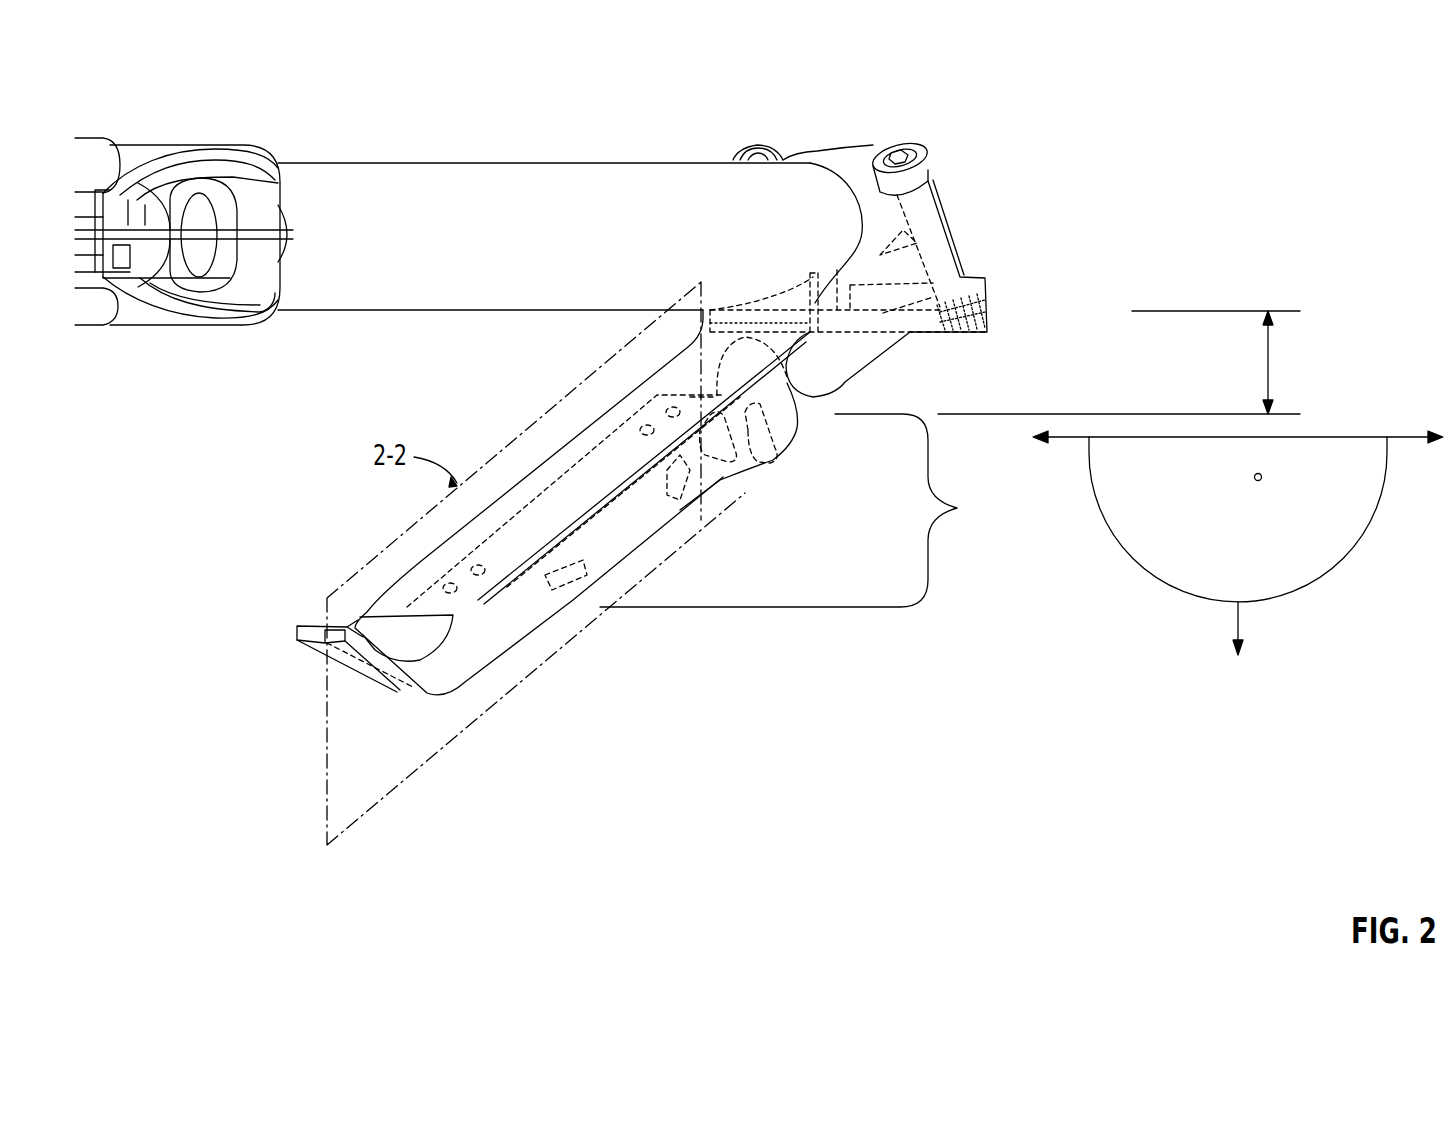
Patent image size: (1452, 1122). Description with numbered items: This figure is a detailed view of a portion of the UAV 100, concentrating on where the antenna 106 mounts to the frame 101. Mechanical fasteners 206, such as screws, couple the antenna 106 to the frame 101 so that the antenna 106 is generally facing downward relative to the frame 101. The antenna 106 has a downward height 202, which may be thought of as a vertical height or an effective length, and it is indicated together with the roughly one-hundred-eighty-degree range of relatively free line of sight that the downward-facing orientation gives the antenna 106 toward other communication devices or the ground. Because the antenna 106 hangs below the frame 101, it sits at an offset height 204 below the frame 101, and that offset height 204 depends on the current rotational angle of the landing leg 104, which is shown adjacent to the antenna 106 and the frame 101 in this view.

The UAV 100 is at (182, 94).
The frame 101 is at (540, 249).
The landing leg 104 is at (418, 561).
The antenna 106 is at (615, 468).
The downward height 202 is at (1027, 523).
The offset height 204 is at (1353, 381).
The mechanical fasteners 206 is at (914, 147).